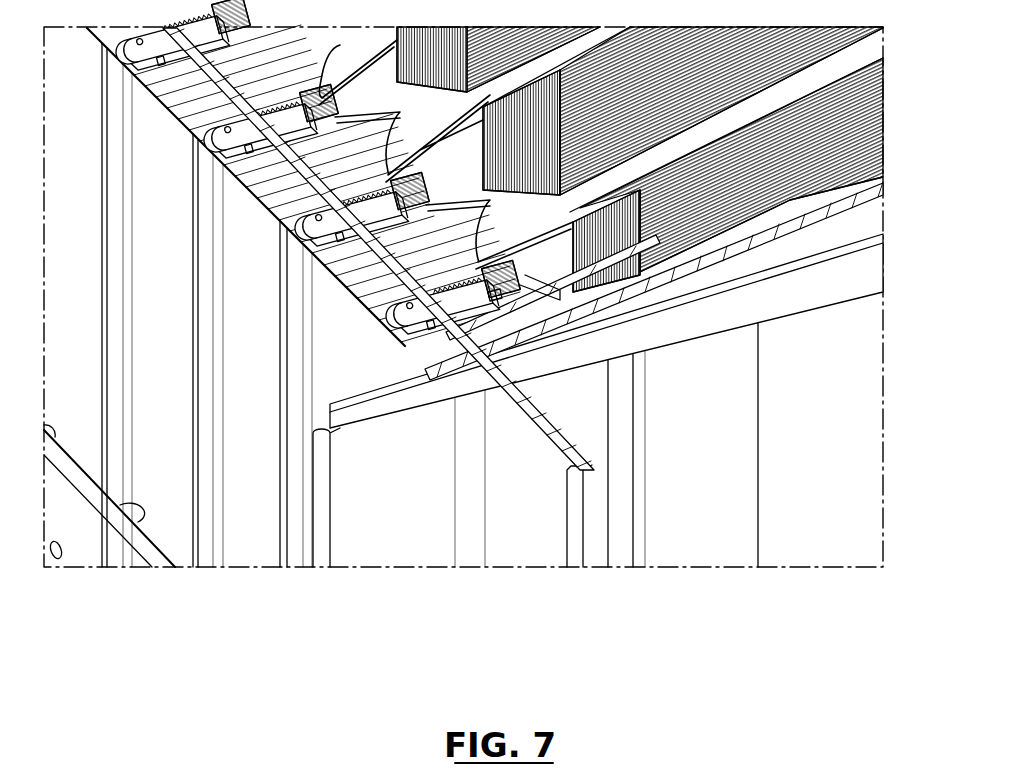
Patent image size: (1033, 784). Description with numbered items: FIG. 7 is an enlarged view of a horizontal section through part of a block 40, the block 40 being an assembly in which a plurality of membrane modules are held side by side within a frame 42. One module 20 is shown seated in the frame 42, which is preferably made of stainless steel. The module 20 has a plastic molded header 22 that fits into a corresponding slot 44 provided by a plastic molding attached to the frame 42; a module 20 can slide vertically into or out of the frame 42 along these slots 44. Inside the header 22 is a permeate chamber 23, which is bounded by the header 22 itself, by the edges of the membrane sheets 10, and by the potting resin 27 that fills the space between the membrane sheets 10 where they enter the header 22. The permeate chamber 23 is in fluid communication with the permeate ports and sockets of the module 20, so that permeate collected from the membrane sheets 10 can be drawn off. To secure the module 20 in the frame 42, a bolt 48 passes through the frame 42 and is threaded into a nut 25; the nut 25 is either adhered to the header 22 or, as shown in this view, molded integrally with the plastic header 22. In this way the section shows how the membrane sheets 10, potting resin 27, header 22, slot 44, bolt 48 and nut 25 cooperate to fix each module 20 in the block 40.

The membrane sheets 10 is at (860, 72).
The module 20 is at (860, 128).
The potting resin 27 is at (800, 196).
The block 40 is at (908, 340).
The frame 42 is at (578, 548).
The slots 44 is at (400, 258).
The bolt 48 is at (440, 375).
The nut 25 is at (480, 312).
The header 22 is at (487, 300).
The permeate chamber 23 is at (530, 283).